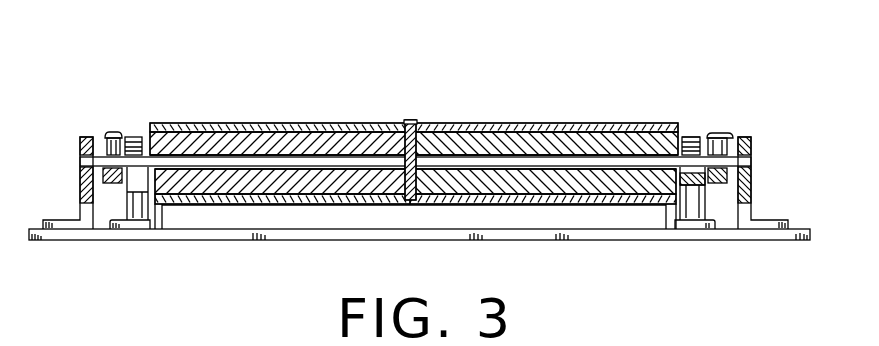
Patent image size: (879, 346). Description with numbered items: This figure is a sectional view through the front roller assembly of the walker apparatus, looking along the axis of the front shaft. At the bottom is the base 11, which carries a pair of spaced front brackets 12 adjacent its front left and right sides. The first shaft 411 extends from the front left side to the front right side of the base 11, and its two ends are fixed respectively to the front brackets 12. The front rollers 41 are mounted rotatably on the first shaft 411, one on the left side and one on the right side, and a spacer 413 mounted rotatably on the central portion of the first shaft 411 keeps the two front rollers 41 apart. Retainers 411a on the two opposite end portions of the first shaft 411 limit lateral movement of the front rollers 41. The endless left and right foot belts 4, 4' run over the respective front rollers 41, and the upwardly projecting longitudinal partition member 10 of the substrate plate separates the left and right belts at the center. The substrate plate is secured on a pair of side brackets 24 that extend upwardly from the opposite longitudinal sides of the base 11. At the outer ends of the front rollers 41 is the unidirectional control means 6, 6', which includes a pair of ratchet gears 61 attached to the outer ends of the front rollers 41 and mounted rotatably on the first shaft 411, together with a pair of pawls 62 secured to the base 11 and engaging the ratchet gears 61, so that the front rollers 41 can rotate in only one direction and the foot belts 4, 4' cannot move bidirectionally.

The left foot belt 4 is at (414, 106).
The right foot belt 4' is at (415, 146).
The front rollers 41 is at (315, 122).
The spacer 413 is at (375, 123).
The first shaft 411 is at (440, 157).
The retainers 411a is at (104, 134).
The partition member 10 is at (411, 120).
The unidirectional control means 6 is at (127, 107).
The unidirectional control means 6' is at (712, 85).
The ratchet gears 61 is at (693, 137).
The pawls 62 is at (706, 208).
The front brackets 12 is at (87, 207).
The base 11 is at (320, 231).
The side brackets 24 is at (672, 210).